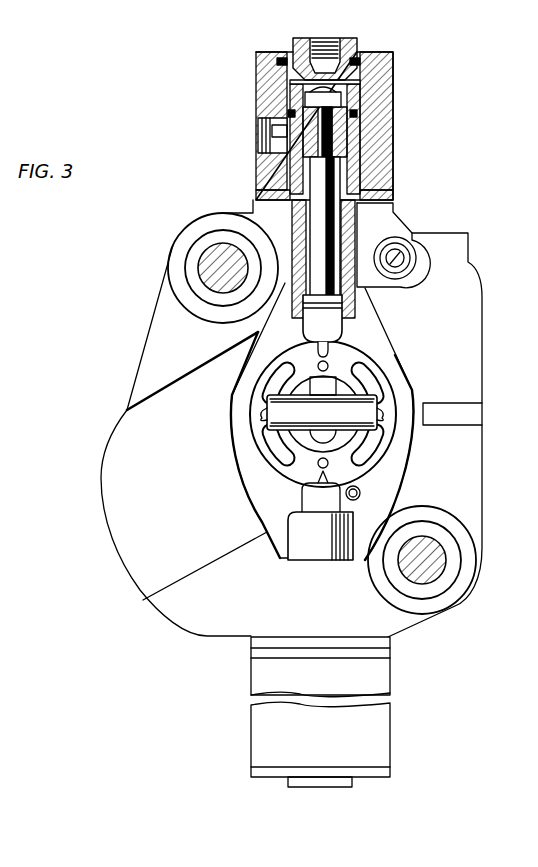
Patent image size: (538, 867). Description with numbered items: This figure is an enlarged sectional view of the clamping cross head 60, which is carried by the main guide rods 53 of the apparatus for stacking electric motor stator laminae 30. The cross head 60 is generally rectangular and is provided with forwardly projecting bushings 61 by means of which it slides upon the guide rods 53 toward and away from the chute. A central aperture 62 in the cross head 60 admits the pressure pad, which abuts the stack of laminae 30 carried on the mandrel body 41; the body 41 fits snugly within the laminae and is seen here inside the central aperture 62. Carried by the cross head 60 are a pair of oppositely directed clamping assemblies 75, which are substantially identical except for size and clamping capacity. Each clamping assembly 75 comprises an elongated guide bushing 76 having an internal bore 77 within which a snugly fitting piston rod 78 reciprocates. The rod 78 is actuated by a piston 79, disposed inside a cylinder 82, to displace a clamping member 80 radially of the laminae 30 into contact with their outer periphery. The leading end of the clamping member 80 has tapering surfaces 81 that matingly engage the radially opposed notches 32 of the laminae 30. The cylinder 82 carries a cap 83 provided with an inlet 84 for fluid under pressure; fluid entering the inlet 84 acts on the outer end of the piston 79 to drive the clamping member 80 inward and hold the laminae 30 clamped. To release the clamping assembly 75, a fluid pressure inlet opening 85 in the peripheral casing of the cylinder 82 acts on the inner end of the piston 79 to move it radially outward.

The lamina 30 is at (385, 372).
The notch 32 is at (335, 345).
The mandrel body 41 is at (290, 410).
The main guide rod 53 is at (222, 268).
The clamping cross head 60 is at (492, 331).
The bushing 61 is at (212, 226).
The central aperture 62 is at (240, 488).
The clamping assembly 75 is at (410, 207).
The guide bushing 76 is at (393, 228).
The internal bore 77 is at (312, 220).
The piston rod 78 is at (320, 180).
The piston 79 is at (358, 95).
The clamping member 80 is at (342, 327).
The tapering surface 81 is at (305, 326).
The cylinder 82 is at (385, 118).
The cap 83 is at (366, 46).
The inlet 84 is at (300, 40).
The fluid pressure inlet opening 85 is at (262, 137).